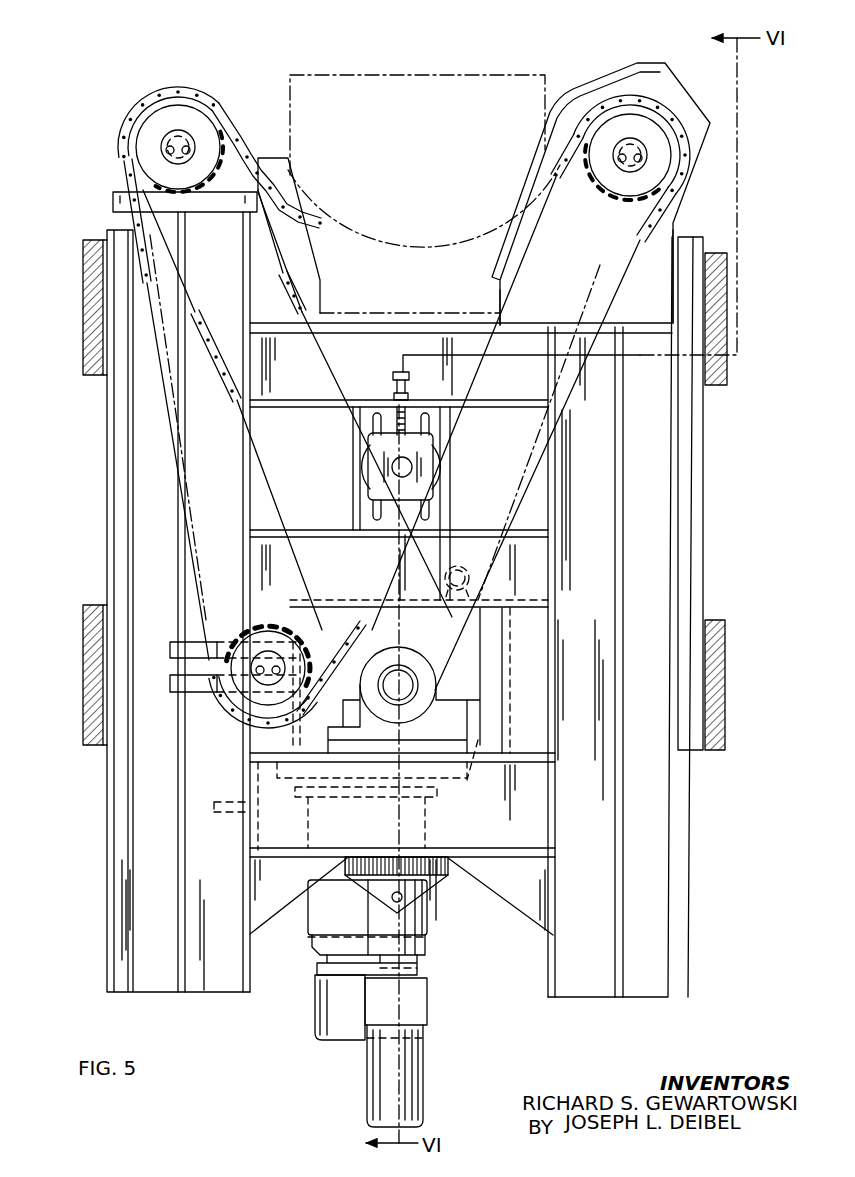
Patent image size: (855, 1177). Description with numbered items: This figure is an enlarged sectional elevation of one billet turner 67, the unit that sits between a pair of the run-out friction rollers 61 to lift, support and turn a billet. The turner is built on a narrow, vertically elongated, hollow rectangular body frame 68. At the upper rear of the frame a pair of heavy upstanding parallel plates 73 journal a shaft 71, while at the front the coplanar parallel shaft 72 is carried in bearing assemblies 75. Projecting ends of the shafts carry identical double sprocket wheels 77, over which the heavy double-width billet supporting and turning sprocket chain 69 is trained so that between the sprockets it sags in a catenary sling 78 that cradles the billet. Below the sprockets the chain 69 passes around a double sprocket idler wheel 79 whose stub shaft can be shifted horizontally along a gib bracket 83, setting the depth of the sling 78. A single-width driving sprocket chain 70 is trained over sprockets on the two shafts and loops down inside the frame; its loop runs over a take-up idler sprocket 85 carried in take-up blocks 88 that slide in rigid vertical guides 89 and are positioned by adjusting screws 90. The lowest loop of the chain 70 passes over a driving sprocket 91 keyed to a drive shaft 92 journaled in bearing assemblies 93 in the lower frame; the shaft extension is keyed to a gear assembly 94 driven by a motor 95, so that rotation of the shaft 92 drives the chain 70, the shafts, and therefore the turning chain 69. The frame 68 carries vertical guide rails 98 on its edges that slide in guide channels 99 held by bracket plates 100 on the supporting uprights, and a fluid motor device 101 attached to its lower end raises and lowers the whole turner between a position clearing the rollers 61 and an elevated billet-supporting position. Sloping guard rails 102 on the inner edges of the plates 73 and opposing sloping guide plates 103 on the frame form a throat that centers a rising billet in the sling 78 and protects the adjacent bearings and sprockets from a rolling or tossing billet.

The friction rollers 61 is at (420, 75).
The billet turner 67 is at (145, 158).
The frame 68 is at (630, 815).
The billet supporting and turning sprocket chain 69 is at (174, 428).
The driving sprocket chain 70 is at (205, 330).
The shaft 71 is at (627, 172).
The shaft 72 is at (200, 142).
The plates 73 is at (695, 196).
The bearing assemblies 75 is at (155, 106).
The double sprocket wheels 77 is at (150, 135).
The sling 78 is at (352, 242).
The double sprocket idler wheel 79 is at (262, 614).
The gib bracket 83 is at (170, 684).
The take-up idler sprocket 85 is at (364, 442).
The take-up blocks 88 is at (380, 476).
The vertical guides 89 is at (372, 431).
The adjusting screws 90 is at (394, 375).
The driving sprocket 91 is at (431, 647).
The drive shaft 92 is at (402, 685).
The bearing assemblies 93 is at (440, 662).
The gear assembly 94 is at (478, 681).
The motor 95 is at (302, 925).
The guide rails 98 is at (122, 902).
The guide channels 99 is at (118, 454).
The bracket plates 100 is at (83, 288).
The fluid motor device 101 is at (367, 1066).
The guard rails 102 is at (558, 112).
The guide plates 103 is at (290, 186).